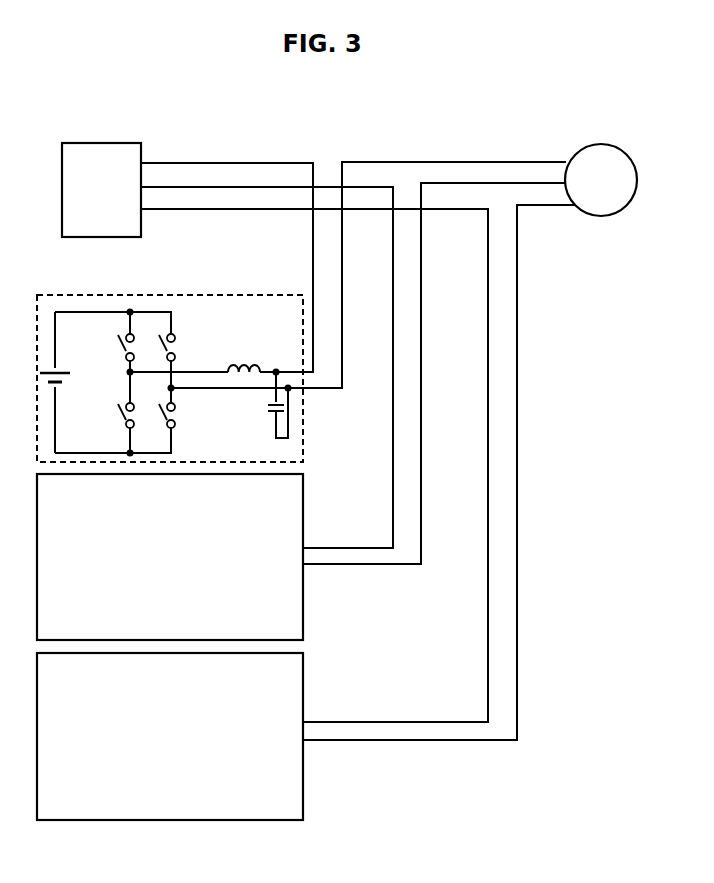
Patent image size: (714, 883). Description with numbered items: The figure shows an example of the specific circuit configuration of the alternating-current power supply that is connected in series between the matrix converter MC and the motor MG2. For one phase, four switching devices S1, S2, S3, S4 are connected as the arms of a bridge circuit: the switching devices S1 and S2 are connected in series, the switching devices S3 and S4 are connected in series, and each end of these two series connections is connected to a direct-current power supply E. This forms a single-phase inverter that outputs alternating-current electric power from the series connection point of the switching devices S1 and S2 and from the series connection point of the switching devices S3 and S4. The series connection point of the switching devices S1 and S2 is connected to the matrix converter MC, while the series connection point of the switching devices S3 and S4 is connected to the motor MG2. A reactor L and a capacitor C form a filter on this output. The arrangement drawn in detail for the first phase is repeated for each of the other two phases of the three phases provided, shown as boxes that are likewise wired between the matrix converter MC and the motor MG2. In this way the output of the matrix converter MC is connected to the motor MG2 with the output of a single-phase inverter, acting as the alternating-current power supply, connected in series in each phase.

The matrix converter MC is at (101, 190).
The motor MG2 is at (601, 180).
The direct-current power supply E is at (58, 363).
The switching device S1 is at (111, 347).
The switching device S2 is at (111, 415).
The switching device S3 is at (183, 347).
The switching device S4 is at (183, 415).
The reactor L is at (244, 353).
The capacitor C is at (268, 405).